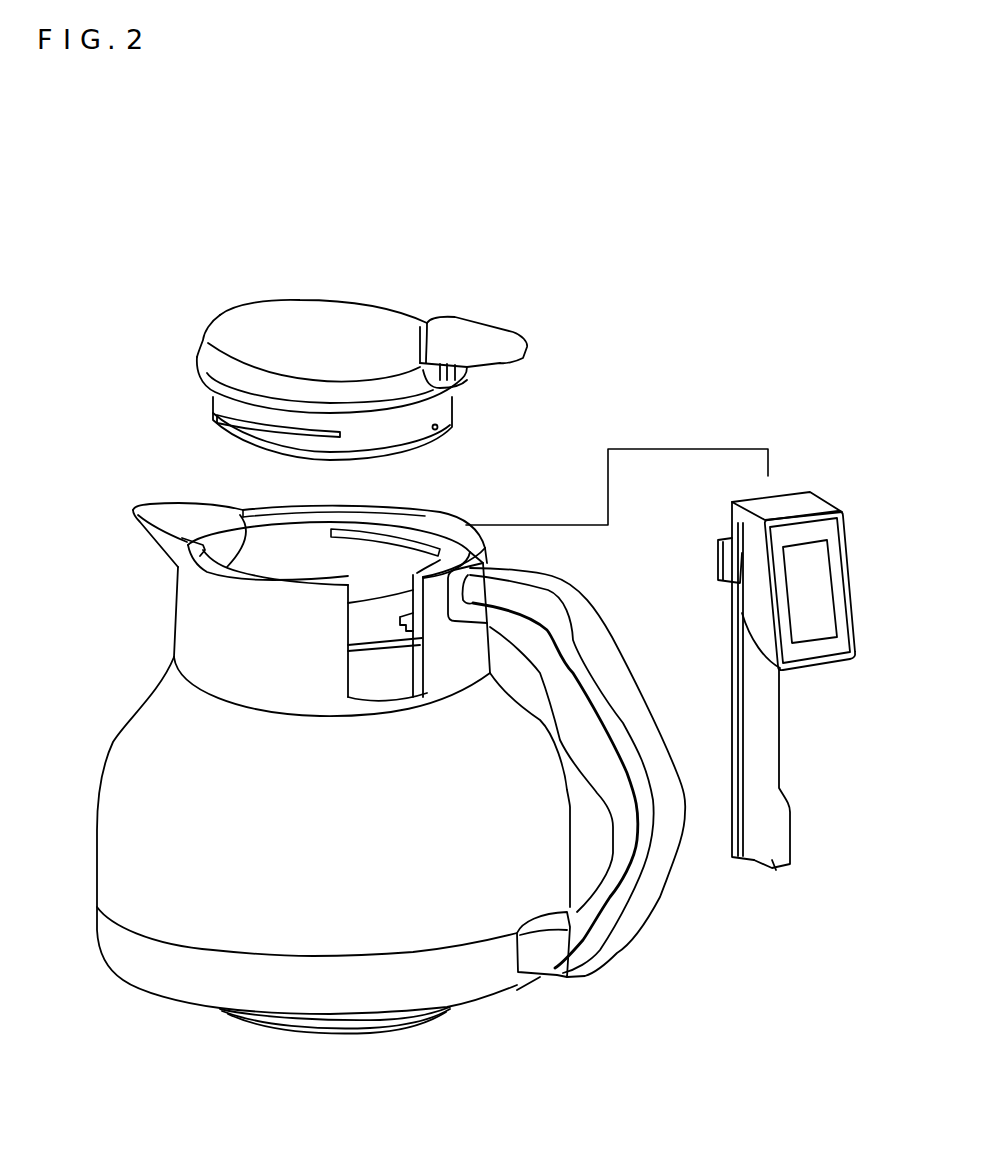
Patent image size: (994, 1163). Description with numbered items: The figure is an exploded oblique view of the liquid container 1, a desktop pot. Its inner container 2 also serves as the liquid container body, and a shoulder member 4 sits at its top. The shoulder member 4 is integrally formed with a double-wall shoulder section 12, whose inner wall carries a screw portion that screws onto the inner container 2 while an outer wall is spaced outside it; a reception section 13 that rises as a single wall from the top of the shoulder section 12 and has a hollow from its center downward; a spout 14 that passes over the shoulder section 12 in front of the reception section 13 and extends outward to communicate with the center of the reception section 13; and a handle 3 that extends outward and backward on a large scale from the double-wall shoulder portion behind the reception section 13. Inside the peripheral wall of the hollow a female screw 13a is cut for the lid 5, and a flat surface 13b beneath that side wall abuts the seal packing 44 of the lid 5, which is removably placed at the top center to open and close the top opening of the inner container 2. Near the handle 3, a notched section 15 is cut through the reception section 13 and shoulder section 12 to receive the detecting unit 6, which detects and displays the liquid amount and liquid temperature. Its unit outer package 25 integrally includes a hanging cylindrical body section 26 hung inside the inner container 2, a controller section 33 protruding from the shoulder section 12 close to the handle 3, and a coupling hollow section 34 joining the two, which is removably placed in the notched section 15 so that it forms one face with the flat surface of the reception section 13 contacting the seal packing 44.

The liquid container 1 is at (598, 388).
The inner container 2 is at (110, 748).
The handle 3 is at (624, 917).
The shoulder member 4 is at (170, 604).
The lid 5 is at (381, 311).
The detecting unit 6 is at (793, 485).
The shoulder section 12 is at (173, 653).
The reception section 13 is at (388, 590).
The female screw 13a is at (343, 530).
The flat surface 13b is at (320, 565).
The spout 14 is at (177, 517).
The notched section 15 is at (387, 670).
The unit outer package 25 is at (845, 556).
The hanging cylindrical body section 26 is at (781, 815).
The controller section 33 is at (855, 622).
The coupling hollow section 34 is at (716, 548).
The seal packing 44 is at (412, 449).